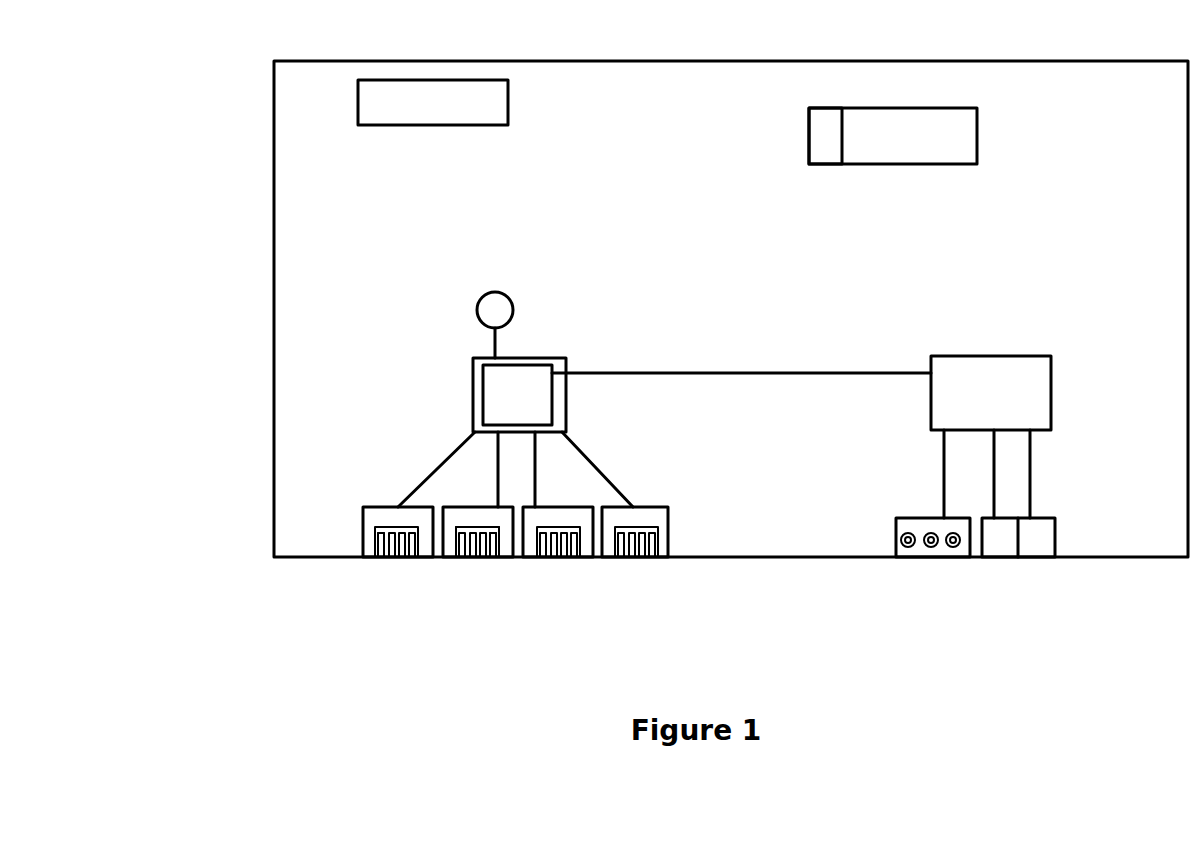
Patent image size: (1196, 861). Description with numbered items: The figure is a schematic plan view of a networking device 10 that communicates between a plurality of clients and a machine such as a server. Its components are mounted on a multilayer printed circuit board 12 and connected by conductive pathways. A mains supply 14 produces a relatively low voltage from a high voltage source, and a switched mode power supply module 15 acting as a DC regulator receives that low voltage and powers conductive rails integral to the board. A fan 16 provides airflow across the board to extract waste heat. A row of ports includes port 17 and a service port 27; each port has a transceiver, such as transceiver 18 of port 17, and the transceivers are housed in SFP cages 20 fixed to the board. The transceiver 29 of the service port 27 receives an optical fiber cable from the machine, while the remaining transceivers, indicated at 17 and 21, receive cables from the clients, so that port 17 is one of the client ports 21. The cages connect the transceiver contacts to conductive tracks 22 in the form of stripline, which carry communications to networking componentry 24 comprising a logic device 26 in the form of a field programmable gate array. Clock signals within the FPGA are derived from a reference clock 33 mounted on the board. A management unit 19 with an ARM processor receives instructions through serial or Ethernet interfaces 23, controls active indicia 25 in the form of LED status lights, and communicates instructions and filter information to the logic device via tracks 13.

The networking device 10 is at (206, 134).
The multilayer printed circuit board 12 is at (293, 250).
The tracks 13 is at (713, 373).
The mains supply 14 is at (942, 108).
The switched mode power supply module 15 is at (822, 108).
The fan 16 is at (475, 82).
The port 17 is at (375, 530).
The transceiver 18 is at (379, 557).
The management unit 19 is at (995, 368).
The SFP cages 20 is at (363, 530).
The client ports 21 is at (423, 571).
The conductive tracks 22 is at (432, 473).
The serial or Ethernet interfaces 23 is at (1018, 568).
The networking componentry 24 is at (473, 395).
The active indicia 25 is at (934, 568).
The logic device 26 is at (513, 360).
The service port 27 is at (497, 540).
The transceiver 29 is at (495, 557).
The reference clock 33 is at (477, 310).